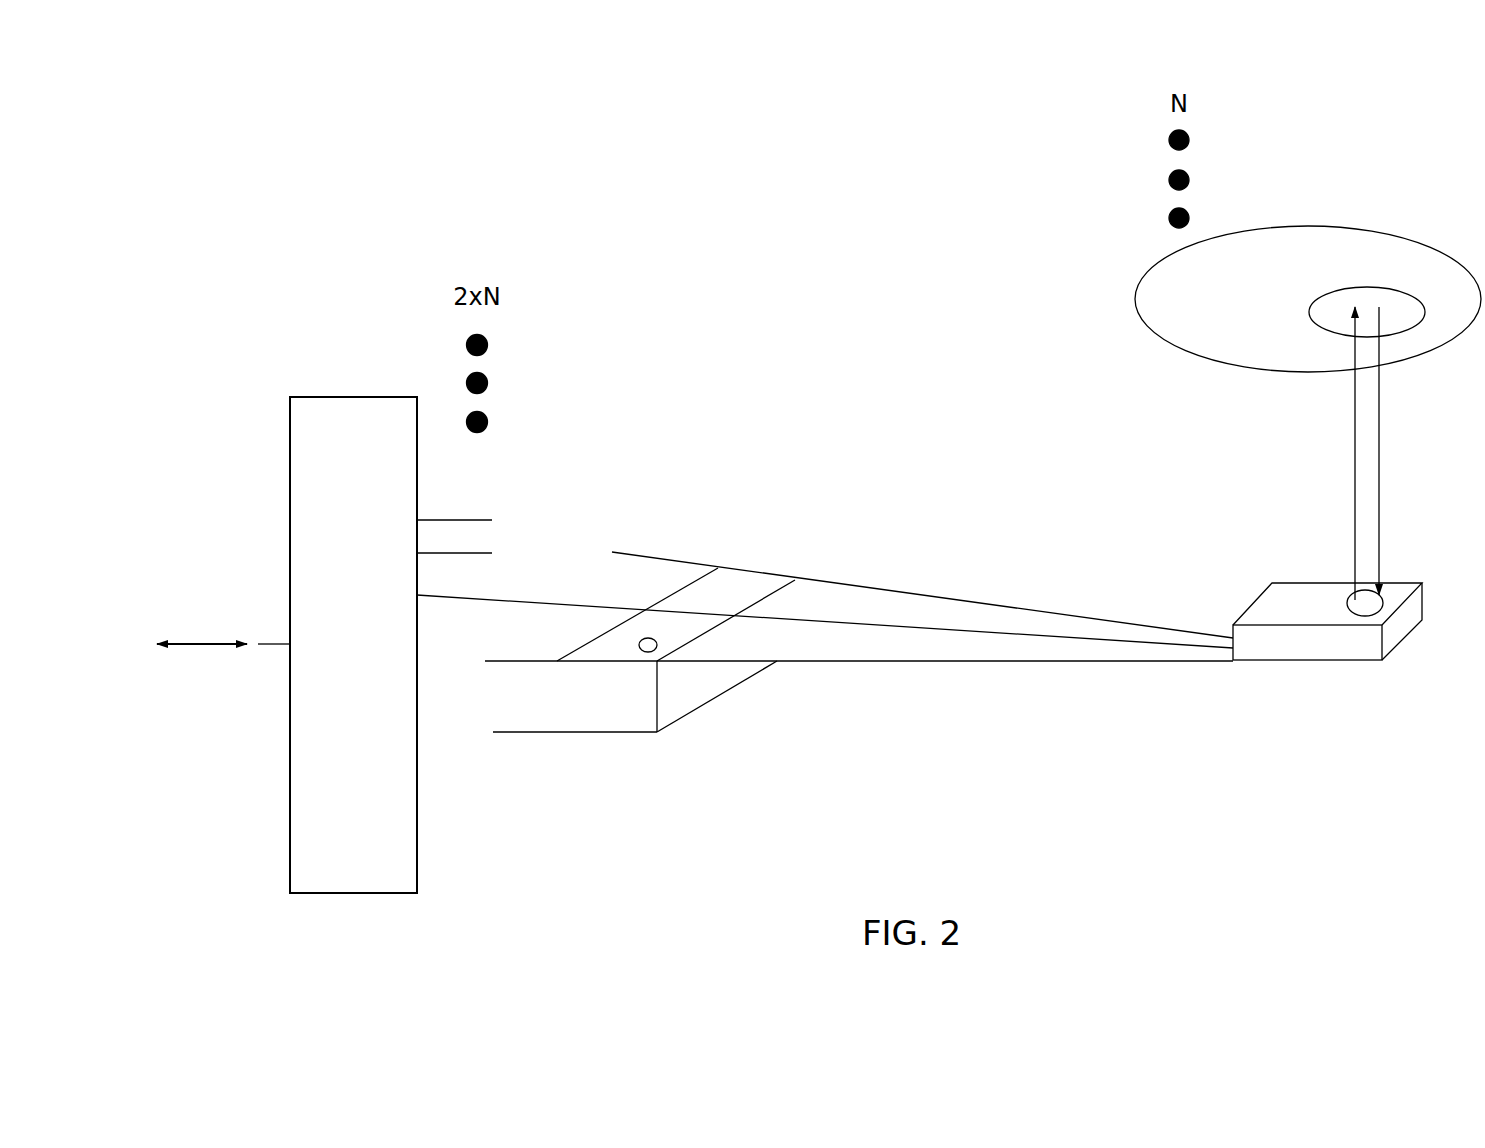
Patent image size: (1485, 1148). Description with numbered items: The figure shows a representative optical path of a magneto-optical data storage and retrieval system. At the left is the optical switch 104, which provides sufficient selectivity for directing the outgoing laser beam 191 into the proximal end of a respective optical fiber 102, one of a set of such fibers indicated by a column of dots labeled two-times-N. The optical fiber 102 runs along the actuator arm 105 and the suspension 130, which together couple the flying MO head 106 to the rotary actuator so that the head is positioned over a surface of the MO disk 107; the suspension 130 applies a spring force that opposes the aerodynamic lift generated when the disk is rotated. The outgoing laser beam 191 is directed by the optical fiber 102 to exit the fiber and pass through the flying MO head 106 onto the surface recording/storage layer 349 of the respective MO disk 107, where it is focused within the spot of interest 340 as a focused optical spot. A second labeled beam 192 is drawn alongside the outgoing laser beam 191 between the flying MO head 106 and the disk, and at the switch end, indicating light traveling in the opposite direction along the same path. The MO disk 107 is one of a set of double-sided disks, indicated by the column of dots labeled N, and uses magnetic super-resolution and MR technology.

The optical switch 104 is at (313, 392).
The optical fiber 102 is at (553, 600).
The actuator arm 105 is at (574, 735).
The suspension 130 is at (925, 665).
The flying MO head 106 is at (1347, 650).
The outgoing laser beam 191 is at (1347, 480).
The reflected light beam 192 is at (1383, 532).
The MO disk 107 is at (1173, 348).
The recording/storage layer 349 is at (1315, 255).
The spot of interest 340 is at (1393, 303).